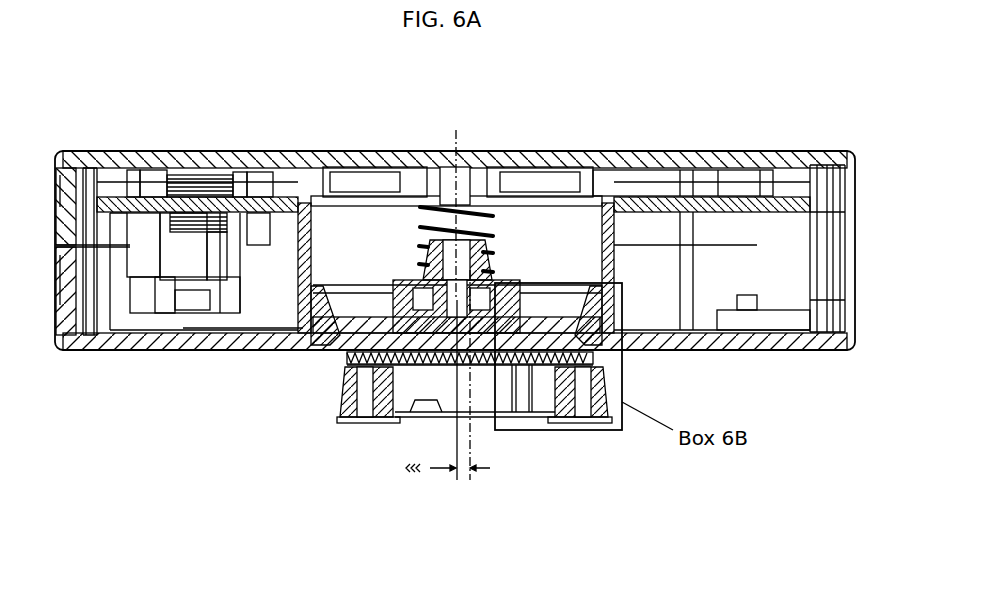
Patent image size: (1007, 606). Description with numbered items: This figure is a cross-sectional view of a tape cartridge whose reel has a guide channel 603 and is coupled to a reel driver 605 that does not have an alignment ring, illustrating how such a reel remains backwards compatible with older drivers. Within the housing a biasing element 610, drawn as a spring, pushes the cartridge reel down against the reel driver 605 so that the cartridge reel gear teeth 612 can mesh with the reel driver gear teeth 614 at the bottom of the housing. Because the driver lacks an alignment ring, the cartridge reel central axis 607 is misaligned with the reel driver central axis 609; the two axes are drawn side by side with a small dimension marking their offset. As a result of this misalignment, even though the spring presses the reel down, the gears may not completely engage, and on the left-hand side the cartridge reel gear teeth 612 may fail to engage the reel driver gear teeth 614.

The guide channel 603 is at (337, 418).
The reel driver 605 is at (487, 395).
The cartridge reel central axis 607 is at (450, 486).
The reel driver central axis 609 is at (474, 489).
The biasing element 610 is at (460, 220).
The cartridge reel gear teeth 612 is at (329, 355).
The reel driver gear teeth 614 is at (432, 366).